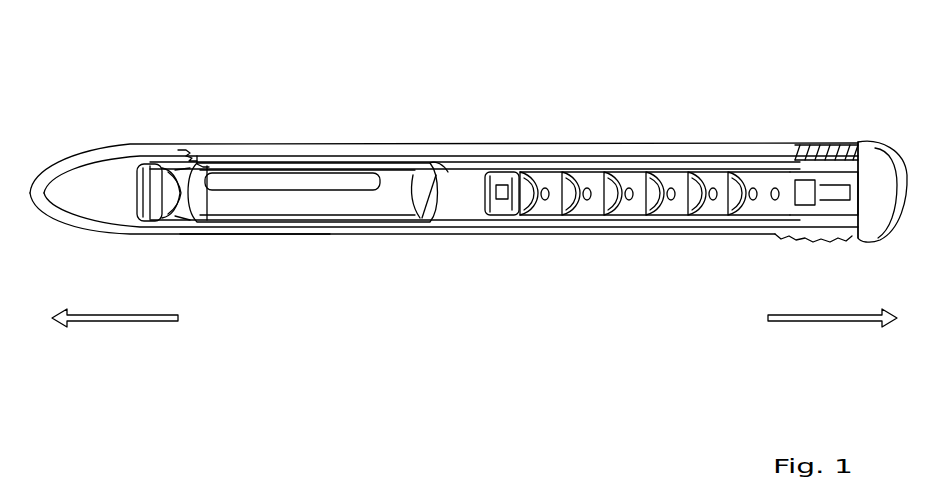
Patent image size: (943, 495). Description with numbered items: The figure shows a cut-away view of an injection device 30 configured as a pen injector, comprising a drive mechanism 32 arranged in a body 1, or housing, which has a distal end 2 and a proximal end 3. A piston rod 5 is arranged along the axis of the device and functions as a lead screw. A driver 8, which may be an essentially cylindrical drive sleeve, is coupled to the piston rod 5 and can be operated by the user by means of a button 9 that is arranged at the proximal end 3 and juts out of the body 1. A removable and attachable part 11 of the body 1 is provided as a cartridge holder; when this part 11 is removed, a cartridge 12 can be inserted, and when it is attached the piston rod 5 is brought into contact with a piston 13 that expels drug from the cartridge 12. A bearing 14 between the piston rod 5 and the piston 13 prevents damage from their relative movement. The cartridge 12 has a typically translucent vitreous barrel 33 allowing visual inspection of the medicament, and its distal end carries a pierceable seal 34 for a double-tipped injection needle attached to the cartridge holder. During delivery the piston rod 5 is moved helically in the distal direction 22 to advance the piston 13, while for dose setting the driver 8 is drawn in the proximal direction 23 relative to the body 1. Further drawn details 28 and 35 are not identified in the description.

The body 1 is at (620, 144).
The distal end 2 is at (489, 92).
The proximal end 3 is at (849, 98).
The piston rod 5 is at (614, 229).
The driver 8 is at (820, 142).
The button 9 is at (870, 144).
The removable and attachable part 11 is at (208, 152).
The cartridge 12 is at (280, 178).
The piston 13 is at (452, 186).
The bearing 14 is at (493, 236).
The distal direction 22 is at (123, 315).
The proximal direction 23 is at (843, 315).
The cap latch 28 is at (182, 150).
The injection device 30 is at (372, 120).
The drive mechanism 32 is at (573, 118).
The vitreous barrel 33 is at (252, 235).
The pierceable seal 34 is at (138, 195).
The cartridge holder 35 is at (343, 206).